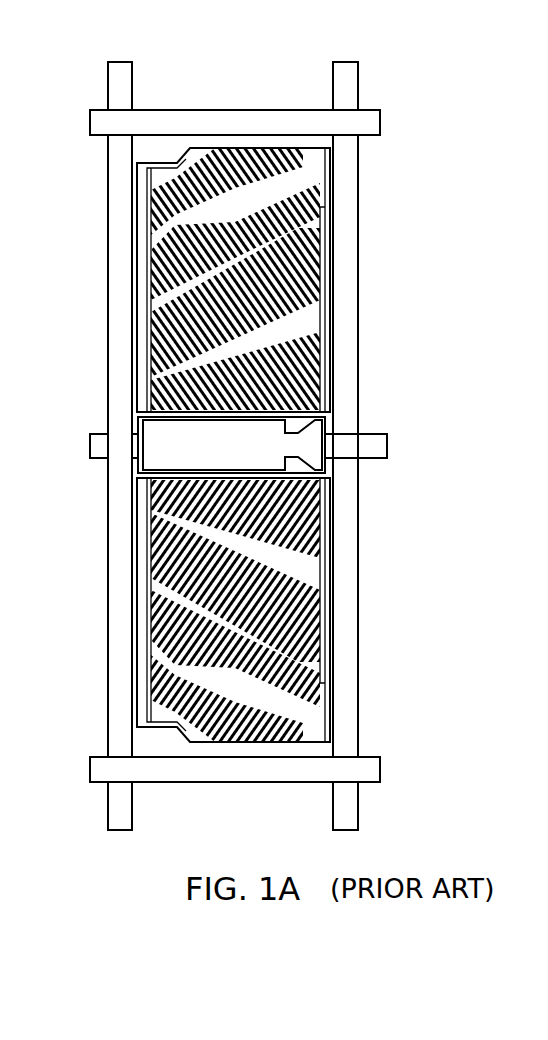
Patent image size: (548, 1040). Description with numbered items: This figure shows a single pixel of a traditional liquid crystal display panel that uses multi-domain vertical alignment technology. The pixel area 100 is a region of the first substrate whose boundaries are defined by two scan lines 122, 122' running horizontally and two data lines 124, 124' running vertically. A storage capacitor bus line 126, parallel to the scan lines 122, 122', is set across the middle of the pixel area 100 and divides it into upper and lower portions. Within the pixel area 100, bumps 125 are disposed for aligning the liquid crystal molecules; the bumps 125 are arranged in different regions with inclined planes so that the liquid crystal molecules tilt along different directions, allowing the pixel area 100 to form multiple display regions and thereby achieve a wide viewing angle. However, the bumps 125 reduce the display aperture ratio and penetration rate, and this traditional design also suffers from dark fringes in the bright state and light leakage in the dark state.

The pixel area 100 is at (150, 153).
The scan line 122 is at (269, 122).
The scan line 122' is at (276, 767).
The data line 124 is at (121, 420).
The data line 124' is at (339, 420).
The bumps 125 is at (253, 320).
The storage capacitor bus line 126 is at (373, 446).